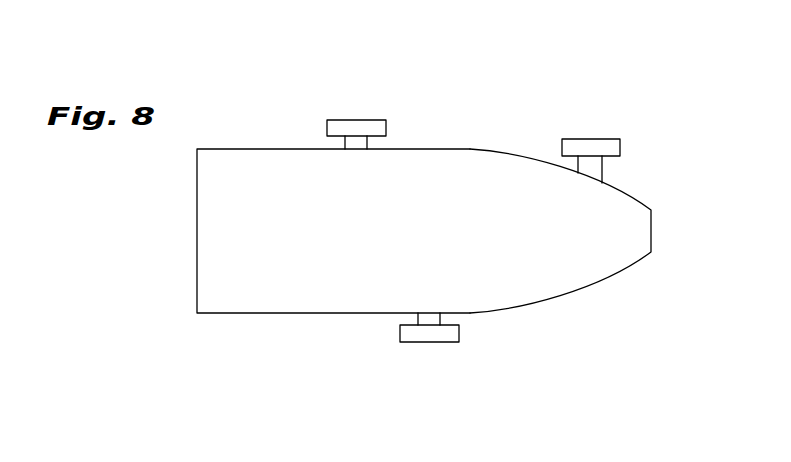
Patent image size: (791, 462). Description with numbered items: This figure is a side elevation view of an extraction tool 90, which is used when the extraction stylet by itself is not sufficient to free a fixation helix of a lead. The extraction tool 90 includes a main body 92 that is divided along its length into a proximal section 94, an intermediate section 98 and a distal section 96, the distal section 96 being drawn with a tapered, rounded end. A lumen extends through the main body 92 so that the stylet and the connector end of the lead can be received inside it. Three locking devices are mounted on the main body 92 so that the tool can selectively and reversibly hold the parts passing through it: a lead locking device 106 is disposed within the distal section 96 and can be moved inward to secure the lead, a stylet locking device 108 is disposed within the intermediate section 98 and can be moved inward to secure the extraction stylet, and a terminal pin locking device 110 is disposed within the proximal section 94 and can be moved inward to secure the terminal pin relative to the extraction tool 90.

The extraction tool 90 is at (281, 92).
The main body 92 is at (304, 252).
The proximal section 94 is at (254, 285).
The distal section 96 is at (608, 208).
The intermediate section 98 is at (365, 273).
The lead locking device 106 is at (592, 135).
The stylet locking device 108 is at (363, 118).
The terminal pin locking device 110 is at (430, 345).